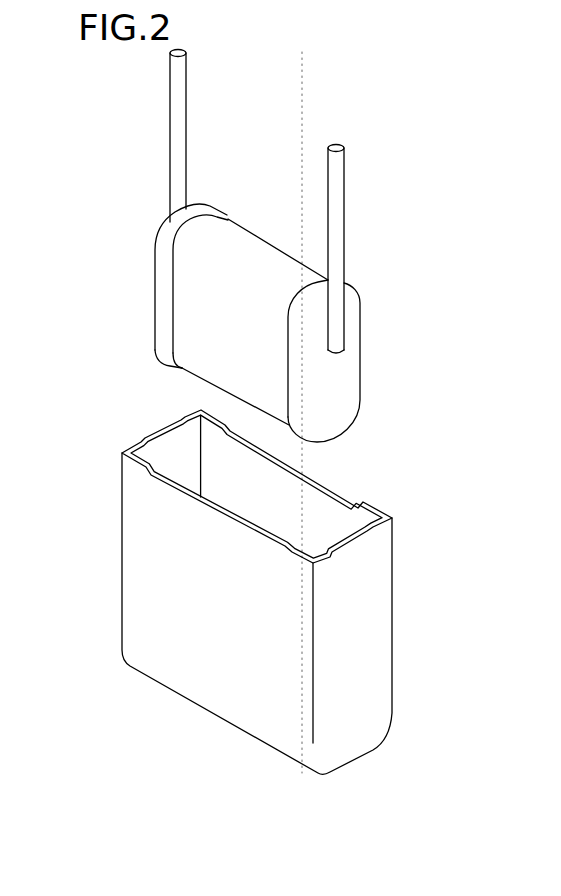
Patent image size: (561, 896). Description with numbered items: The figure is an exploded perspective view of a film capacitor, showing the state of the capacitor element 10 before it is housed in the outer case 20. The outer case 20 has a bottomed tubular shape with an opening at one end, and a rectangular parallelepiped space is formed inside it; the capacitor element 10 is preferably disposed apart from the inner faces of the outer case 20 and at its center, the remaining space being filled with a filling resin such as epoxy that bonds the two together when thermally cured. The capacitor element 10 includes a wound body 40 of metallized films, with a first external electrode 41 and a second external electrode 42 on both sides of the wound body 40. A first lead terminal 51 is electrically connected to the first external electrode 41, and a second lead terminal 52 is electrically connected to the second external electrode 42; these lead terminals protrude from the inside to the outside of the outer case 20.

The capacitor element 10 is at (136, 251).
The outer case 20 is at (382, 633).
The wound body 40 is at (247, 255).
The first external electrode 41 is at (160, 298).
The second external electrode 42 is at (350, 380).
The first lead terminal 51 is at (176, 113).
The second lead terminal 52 is at (338, 205).